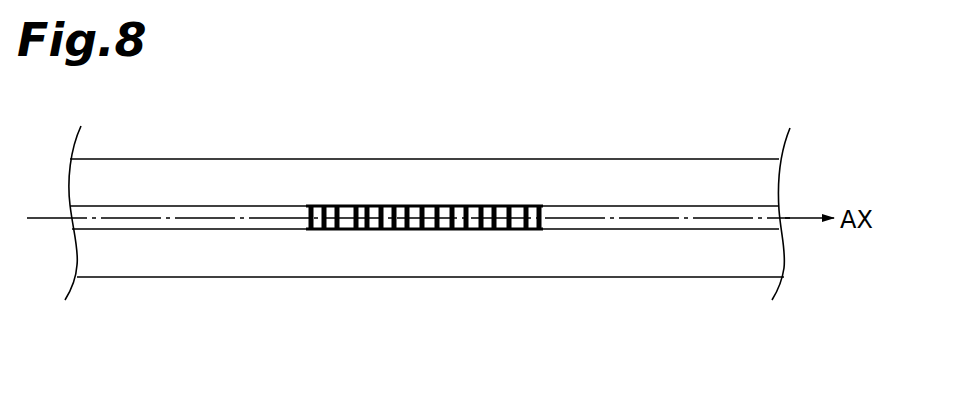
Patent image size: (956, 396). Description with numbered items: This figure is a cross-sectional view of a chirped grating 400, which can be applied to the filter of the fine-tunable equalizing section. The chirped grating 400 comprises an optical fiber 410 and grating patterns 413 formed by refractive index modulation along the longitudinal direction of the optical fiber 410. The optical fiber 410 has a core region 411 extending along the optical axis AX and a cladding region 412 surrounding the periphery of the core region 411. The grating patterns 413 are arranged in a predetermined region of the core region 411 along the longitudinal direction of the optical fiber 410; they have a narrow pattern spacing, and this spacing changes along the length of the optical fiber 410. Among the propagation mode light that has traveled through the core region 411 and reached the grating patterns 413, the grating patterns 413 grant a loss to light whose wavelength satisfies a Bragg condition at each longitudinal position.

The chirped grating 400 is at (558, 159).
The optical fiber 410 is at (427, 297).
The core region 411 is at (110, 223).
The cladding region 412 is at (163, 265).
The grating patterns 413 is at (402, 227).